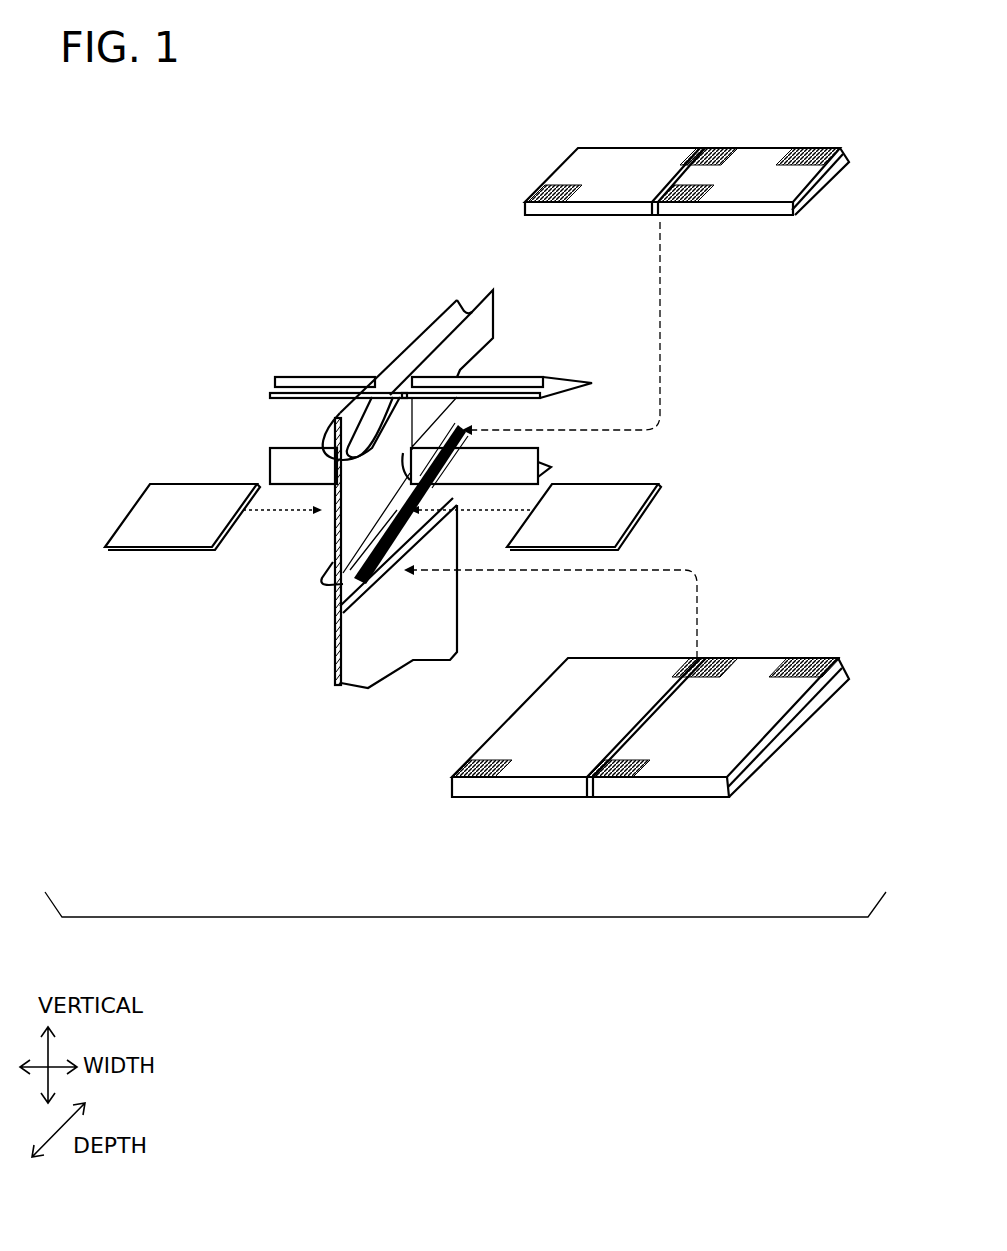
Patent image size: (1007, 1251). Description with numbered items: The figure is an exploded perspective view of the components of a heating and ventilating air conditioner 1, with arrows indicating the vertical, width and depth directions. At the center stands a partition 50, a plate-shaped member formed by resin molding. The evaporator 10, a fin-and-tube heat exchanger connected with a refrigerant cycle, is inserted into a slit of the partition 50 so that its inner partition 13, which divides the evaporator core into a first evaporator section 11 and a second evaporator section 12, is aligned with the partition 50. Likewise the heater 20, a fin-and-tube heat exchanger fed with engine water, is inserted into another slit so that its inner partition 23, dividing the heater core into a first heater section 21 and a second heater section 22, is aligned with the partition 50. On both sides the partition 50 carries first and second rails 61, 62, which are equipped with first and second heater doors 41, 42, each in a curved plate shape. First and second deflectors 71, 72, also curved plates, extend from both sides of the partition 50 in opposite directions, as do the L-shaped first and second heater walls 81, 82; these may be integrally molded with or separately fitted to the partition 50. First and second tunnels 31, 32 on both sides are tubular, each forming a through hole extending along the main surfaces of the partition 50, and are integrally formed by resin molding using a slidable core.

The heating and ventilating air conditioner (HVAC) 1 is at (467, 950).
The evaporator 10 is at (638, 772).
The first evaporator section 11 is at (693, 755).
The second evaporator section 12 is at (530, 755).
The inner partition 13 is at (623, 743).
The heater 20 is at (689, 131).
The first heater section 21 is at (768, 158).
The second heater section 22 is at (605, 158).
The inner partition 23 is at (700, 150).
The first tunnel 31 is at (420, 418).
The second tunnel 32 is at (332, 417).
The first heater door 41 is at (653, 527).
The second heater door 42 is at (119, 513).
The partition 50 is at (407, 359).
The first rail 61 is at (368, 573).
The second rail 62 is at (321, 582).
The first deflector 71 is at (530, 377).
The second deflector 72 is at (293, 377).
The first heater wall 81 is at (540, 460).
The second heater wall 82 is at (268, 466).